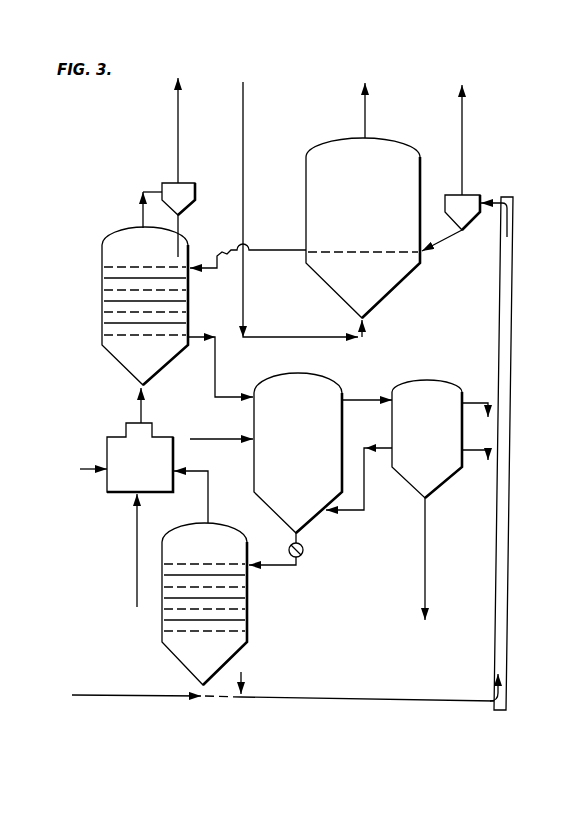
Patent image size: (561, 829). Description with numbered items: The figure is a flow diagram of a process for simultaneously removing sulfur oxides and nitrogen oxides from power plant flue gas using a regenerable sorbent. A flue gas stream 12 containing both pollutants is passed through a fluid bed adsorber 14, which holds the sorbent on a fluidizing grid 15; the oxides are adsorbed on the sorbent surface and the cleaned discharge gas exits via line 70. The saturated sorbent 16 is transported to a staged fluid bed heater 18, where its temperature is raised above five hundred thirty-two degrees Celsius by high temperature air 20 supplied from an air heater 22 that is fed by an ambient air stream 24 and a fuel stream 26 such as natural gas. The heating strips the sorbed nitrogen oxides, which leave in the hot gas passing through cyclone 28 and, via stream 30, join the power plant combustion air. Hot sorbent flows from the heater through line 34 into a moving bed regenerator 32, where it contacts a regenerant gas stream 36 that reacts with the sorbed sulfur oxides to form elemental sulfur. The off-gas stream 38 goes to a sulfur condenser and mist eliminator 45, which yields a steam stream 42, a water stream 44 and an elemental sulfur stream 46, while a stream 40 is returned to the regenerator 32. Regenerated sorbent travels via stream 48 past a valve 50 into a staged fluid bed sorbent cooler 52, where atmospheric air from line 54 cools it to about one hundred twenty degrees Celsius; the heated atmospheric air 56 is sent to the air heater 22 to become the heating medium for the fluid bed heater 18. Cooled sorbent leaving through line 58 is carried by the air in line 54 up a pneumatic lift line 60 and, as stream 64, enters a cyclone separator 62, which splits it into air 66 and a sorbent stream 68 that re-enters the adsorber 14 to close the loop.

The flue gas stream 12 is at (245, 103).
The fluid bed adsorber 14 is at (304, 186).
The fluidizing grid 15 is at (400, 252).
The saturated sorbent 16 is at (272, 250).
The fluid bed heater 18 is at (188, 242).
The high temperature air 20 is at (145, 400).
The air heater 22 is at (165, 437).
The ambient air stream 24 is at (133, 588).
The fuel stream 26 is at (86, 472).
The cyclone 28 is at (196, 190).
The stream 30 is at (181, 137).
The moving bed regenerator 32 is at (345, 427).
The line 34 is at (218, 356).
The regenerant gas stream 36 is at (226, 441).
The off-gas stream 38 is at (350, 399).
The return stream 40 is at (366, 486).
The steam stream 42 is at (466, 400).
The water stream 44 is at (481, 453).
The sulfur condenser and mist eliminator 45 is at (464, 426).
The elemental sulfur stream 46 is at (428, 578).
The regenerated sorbent stream 48 is at (266, 568).
The valve 50 is at (304, 550).
The fluid bed sorbent cooler 52 is at (250, 605).
The atmospheric air line 54 is at (124, 695).
The heated atmospheric air 56 is at (210, 497).
The cooled sorbent line 58 is at (243, 672).
The pneumatic lift line 60 is at (500, 626).
The cyclone separator 62 is at (470, 195).
The stream 64 is at (490, 206).
The air 66 is at (465, 148).
The sorbent stream 68 is at (440, 250).
The discharge gas line 70 is at (368, 106).